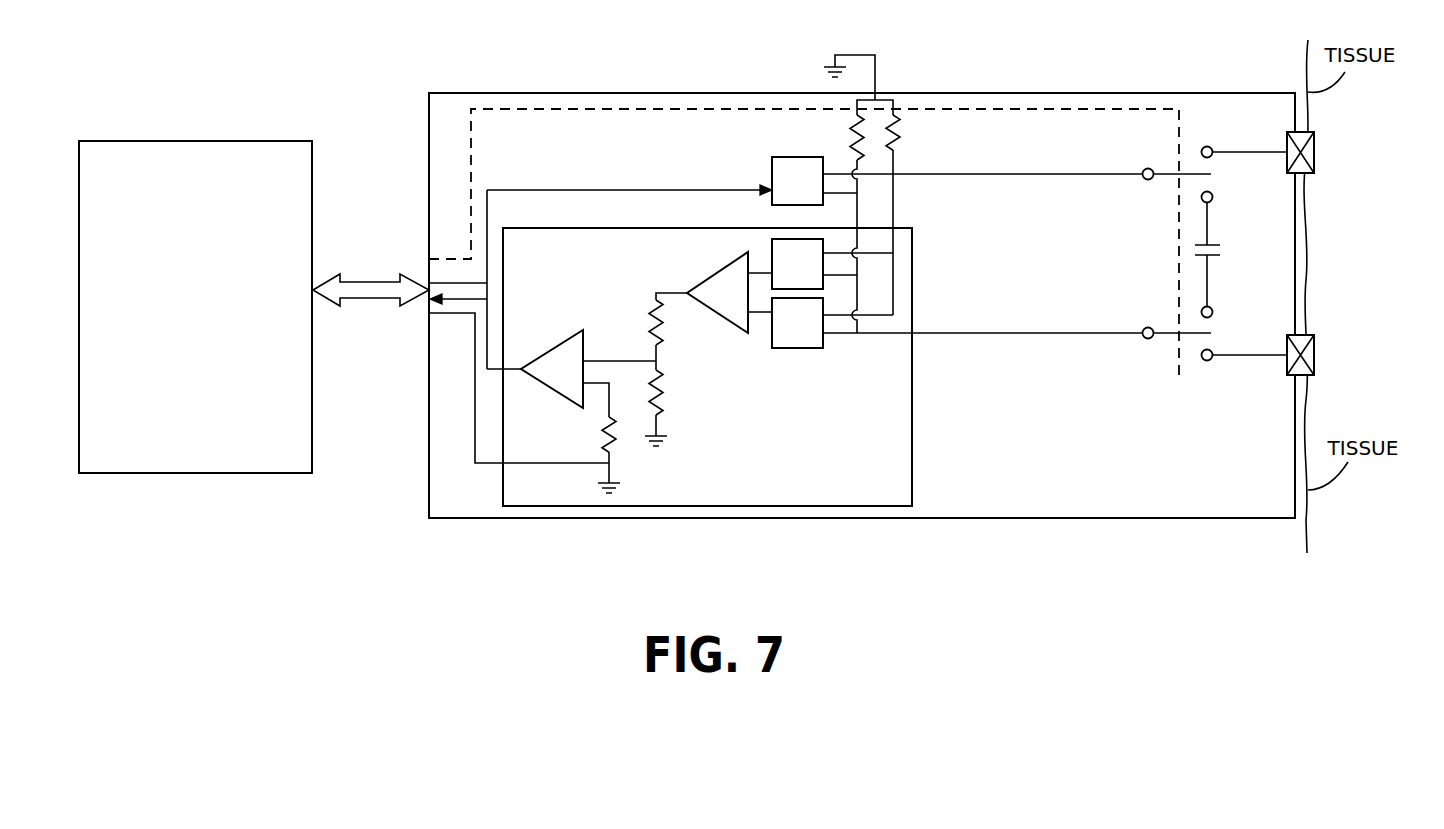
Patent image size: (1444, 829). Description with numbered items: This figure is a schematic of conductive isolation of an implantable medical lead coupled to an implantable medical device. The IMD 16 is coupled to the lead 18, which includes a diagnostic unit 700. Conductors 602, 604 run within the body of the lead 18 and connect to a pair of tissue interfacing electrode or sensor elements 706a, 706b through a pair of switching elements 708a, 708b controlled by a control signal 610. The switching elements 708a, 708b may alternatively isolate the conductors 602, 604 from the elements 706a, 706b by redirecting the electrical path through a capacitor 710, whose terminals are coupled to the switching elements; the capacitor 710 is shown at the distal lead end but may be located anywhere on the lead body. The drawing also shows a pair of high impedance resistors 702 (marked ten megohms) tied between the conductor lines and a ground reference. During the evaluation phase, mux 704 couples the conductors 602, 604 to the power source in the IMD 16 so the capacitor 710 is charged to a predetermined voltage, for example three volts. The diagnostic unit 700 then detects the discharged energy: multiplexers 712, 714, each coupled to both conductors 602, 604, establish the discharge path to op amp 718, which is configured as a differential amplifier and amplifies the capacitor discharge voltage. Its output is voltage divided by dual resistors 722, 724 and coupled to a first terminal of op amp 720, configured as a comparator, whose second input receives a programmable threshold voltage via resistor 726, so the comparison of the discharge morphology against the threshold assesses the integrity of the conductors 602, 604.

The implantable medical device 16 is at (243, 473).
The lead 18 is at (822, 556).
The conductor 602 is at (975, 174).
The conductor 604 is at (978, 333).
The control signal 610 is at (1029, 108).
The diagnostic unit 700 is at (912, 452).
The high impedance resistors (10 MΩ) 702 is at (850, 136).
The multiplexer 704 is at (772, 176).
The electrode or sensor element 706a is at (1314, 162).
The electrode or sensor element 706b is at (1314, 365).
The switching element 708a is at (1168, 178).
The switching element 708b is at (1168, 338).
The capacitor 710 is at (1222, 250).
The multiplexer 712 is at (772, 250).
The multiplexer 714 is at (815, 348).
The op amp 718 is at (712, 283).
The op amp 720 is at (548, 352).
The resistor 722 is at (676, 322).
The resistor 724 is at (677, 392).
The resistor 726 is at (586, 434).